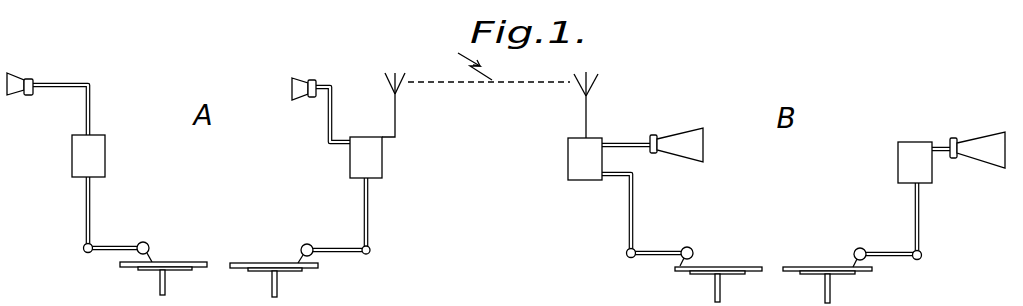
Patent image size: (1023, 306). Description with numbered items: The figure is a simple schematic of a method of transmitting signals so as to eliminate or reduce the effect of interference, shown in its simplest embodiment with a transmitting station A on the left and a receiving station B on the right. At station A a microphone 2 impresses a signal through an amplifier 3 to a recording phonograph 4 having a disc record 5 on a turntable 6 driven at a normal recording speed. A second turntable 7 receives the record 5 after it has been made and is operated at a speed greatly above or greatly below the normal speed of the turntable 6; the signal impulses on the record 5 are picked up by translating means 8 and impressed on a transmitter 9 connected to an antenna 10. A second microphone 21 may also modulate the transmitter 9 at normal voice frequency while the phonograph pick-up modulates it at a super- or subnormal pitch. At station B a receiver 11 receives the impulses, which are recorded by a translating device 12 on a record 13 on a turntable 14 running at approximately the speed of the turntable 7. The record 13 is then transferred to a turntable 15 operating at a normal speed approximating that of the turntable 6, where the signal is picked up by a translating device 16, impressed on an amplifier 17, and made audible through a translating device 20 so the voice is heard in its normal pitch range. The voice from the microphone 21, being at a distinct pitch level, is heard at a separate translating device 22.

The microphone 2 is at (21, 72).
The amplifier 3 is at (97, 153).
The recording phonograph 4 is at (148, 243).
The disc record 5 is at (200, 261).
The turntable 6 is at (185, 270).
The second turntable 7 is at (271, 282).
The translating means 8 is at (309, 244).
The transmitter 9 is at (373, 158).
The antenna 10 is at (398, 108).
The receiver 11 is at (577, 155).
The translating device 12 is at (689, 249).
The record 13 is at (738, 267).
The turntable 14 is at (735, 275).
The turntable 15 is at (808, 275).
The translating device 16 is at (862, 249).
The amplifier 17 is at (923, 168).
The translating device 20 is at (980, 145).
The second microphone 21 is at (311, 78).
The translating device 22 is at (655, 137).